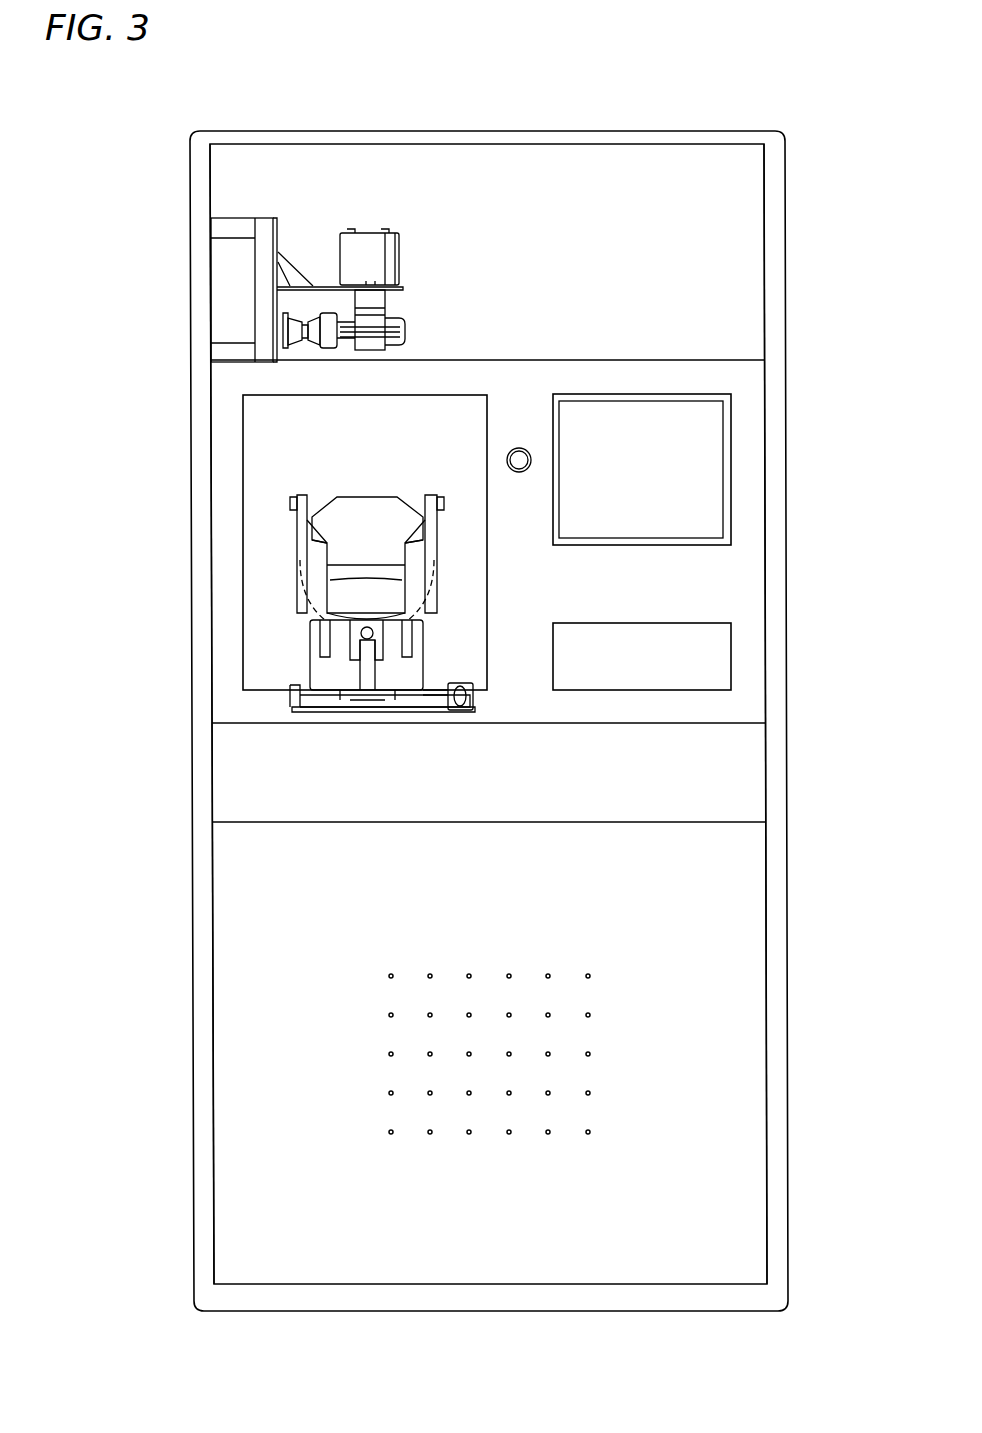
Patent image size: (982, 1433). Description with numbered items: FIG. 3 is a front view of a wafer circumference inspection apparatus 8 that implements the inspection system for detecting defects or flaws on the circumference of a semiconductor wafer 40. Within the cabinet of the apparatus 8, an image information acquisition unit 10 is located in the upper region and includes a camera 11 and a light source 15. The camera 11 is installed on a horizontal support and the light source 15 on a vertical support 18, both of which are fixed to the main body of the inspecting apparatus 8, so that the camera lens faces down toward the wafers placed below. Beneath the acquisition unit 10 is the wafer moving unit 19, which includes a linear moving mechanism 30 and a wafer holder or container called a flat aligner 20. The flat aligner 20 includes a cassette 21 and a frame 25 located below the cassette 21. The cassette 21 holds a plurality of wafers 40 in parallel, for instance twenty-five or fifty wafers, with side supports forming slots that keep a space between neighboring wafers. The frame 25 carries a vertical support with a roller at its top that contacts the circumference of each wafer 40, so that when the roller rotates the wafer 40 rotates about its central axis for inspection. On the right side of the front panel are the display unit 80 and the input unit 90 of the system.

The wafer circumference inspection apparatus 8 is at (716, 86).
The image information acquisition unit 10 is at (406, 190).
The camera 11 is at (340, 252).
The light source 15 is at (321, 357).
The vertical support 18 is at (279, 240).
The wafer moving unit 19 is at (106, 547).
The flat aligner 20 is at (276, 573).
The cassette 21 is at (297, 524).
The frame 25 is at (336, 678).
The linear moving mechanism 30 is at (281, 703).
The semiconductor wafer 40 is at (355, 507).
The display unit 80 is at (678, 470).
The input unit 90 is at (678, 658).